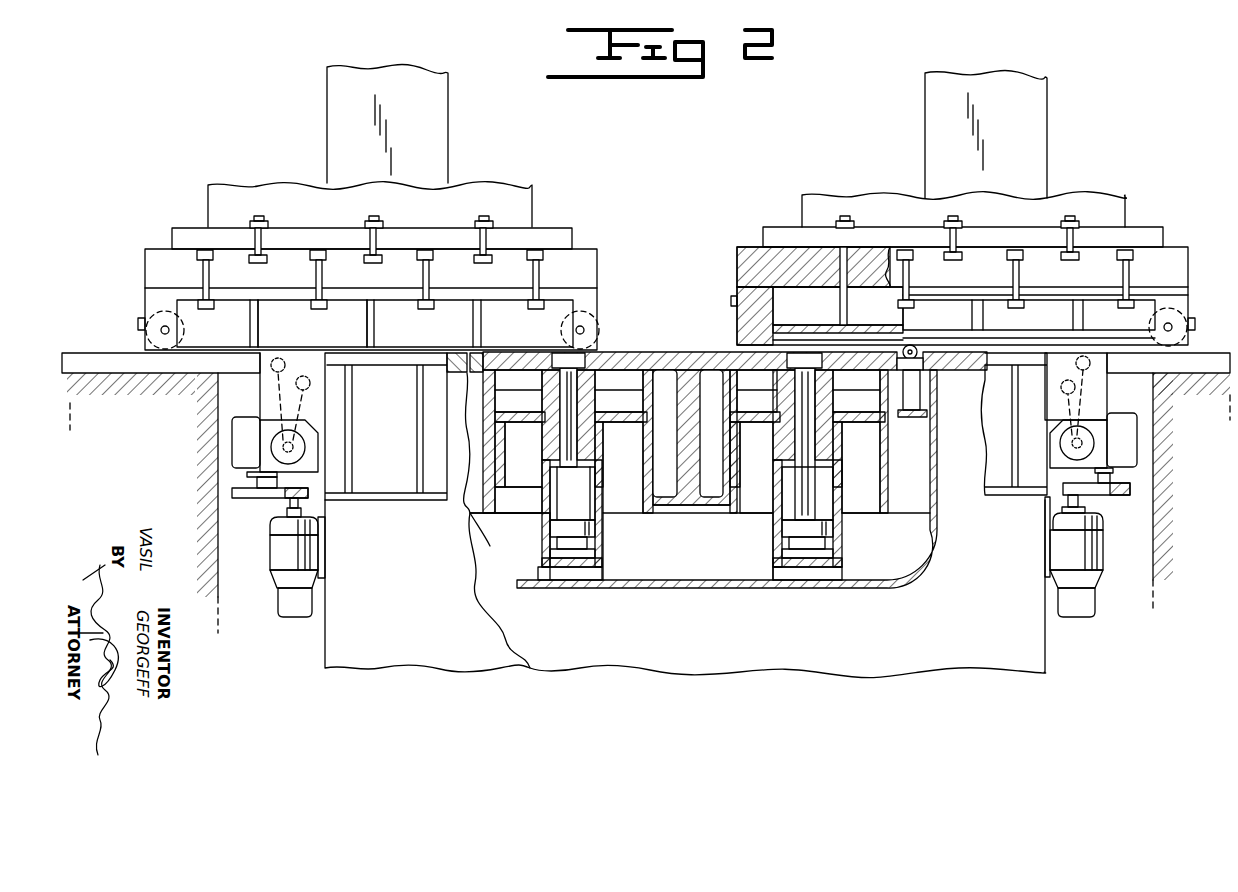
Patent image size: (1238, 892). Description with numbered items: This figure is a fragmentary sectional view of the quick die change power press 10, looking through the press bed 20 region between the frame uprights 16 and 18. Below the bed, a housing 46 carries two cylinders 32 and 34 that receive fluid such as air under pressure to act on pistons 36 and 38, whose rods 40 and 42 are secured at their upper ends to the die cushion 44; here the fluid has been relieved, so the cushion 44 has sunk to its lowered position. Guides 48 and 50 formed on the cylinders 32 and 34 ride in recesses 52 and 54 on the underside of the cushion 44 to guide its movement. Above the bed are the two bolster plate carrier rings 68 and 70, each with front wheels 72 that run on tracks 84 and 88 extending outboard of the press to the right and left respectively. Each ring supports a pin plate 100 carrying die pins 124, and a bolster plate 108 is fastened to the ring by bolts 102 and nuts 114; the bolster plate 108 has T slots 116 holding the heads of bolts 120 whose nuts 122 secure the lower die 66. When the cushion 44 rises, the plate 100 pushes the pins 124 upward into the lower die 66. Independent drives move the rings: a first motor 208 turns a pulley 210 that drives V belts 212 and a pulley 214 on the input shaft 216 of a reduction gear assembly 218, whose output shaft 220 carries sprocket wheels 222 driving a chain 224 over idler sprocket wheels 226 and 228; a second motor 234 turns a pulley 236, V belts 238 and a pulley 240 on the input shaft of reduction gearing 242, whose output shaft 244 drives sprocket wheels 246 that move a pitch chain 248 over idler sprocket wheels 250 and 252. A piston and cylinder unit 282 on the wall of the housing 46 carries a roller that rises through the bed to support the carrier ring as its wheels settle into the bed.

The quick die change power press 10 is at (1123, 171).
The upright 16 is at (448, 147).
The upright 18 is at (1047, 144).
The press bed 20 is at (947, 342).
The cylinder 32 is at (598, 547).
The cylinder 34 is at (774, 549).
The piston 36 is at (598, 526).
The piston 38 is at (841, 529).
The piston rod 40 is at (563, 445).
The piston rod 42 is at (808, 482).
The die cushion 44 is at (680, 353).
The housing 46 is at (690, 589).
The guide 48 is at (637, 475).
The guide 50 is at (739, 477).
The recess 52 is at (512, 516).
The recess 54 is at (684, 514).
The lower die 66 is at (533, 211).
The bolster plate carrier ring 68 is at (666, 317).
The bolster plate carrier ring 70 is at (737, 303).
The front wheels 72 is at (598, 331).
The track 84 is at (1200, 352).
The track 88 is at (125, 354).
The pin plate 100 is at (830, 323).
The bolts 102 is at (209, 276).
The bolster plate 108 is at (598, 277).
The nuts 114 is at (348, 323).
The T slots 116 is at (265, 258).
The bolts 120 is at (668, 238).
The nuts 122 is at (262, 216).
The die pins 124 is at (848, 319).
The first motor 208 is at (1103, 599).
The pulley 210 is at (1060, 500).
The V belts 212 is at (1102, 513).
The pulley 214 is at (1105, 497).
The input shaft 216 is at (1113, 477).
The reduction gear assembly 218 is at (1120, 415).
The output shaft 220 is at (1070, 452).
The sprocket wheel 222 is at (1094, 431).
The chain 224 is at (1041, 345).
The idler sprocket wheel 226 is at (1063, 386).
The idler sprocket wheel 228 is at (1121, 340).
The second motor 234 is at (296, 618).
The pulley 236 is at (320, 505).
The V belts 238 is at (278, 500).
The pulley 240 is at (258, 498).
The reduction gearing 242 is at (243, 418).
The output shaft 244 is at (250, 474).
The sprocket wheel 246 is at (305, 447).
The pitch chain 248 is at (288, 395).
The idler sprocket wheel 250 is at (286, 346).
The idler sprocket wheel 252 is at (336, 346).
The piston and cylinder unit 282 is at (925, 401).